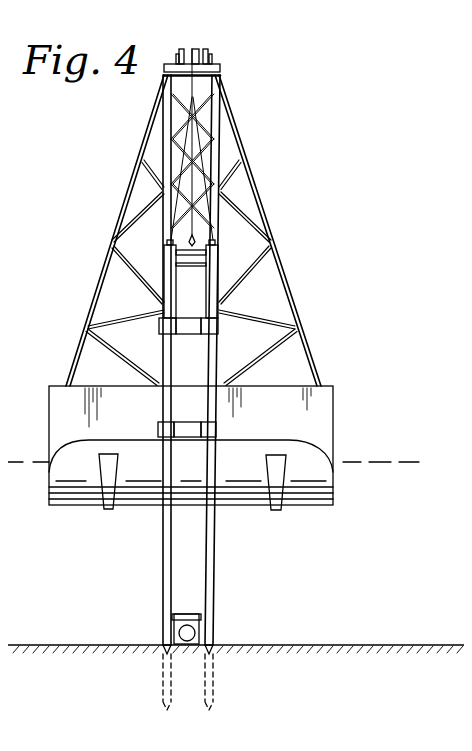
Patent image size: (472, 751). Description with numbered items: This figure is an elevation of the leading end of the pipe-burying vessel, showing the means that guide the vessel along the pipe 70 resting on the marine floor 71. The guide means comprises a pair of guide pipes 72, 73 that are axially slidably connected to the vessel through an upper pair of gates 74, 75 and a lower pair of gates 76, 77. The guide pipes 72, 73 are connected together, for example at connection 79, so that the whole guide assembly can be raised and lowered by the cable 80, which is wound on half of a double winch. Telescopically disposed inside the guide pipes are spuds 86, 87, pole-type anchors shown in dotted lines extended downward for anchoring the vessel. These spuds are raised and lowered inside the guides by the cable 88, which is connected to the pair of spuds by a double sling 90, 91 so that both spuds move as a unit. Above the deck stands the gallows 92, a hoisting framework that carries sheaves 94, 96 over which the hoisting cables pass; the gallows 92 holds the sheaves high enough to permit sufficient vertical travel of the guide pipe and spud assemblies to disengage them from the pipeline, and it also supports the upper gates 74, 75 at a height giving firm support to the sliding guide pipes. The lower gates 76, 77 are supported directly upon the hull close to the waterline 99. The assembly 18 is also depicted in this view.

The drill head / traveling block 18 is at (188, 263).
The pipe 70 is at (194, 632).
The marine floor 71 is at (330, 641).
The guide pipe 72 is at (160, 545).
The guide pipe 73 is at (214, 545).
The gate 74 is at (163, 322).
The gate 75 is at (218, 326).
The gate 76 is at (160, 426).
The gate 77 is at (218, 430).
The connection 79 is at (200, 614).
The cable 80 is at (193, 97).
The spud 86 is at (160, 688).
The spud 87 is at (215, 688).
The cable 88 is at (186, 94).
The double sling 90 is at (165, 212).
The double sling 91 is at (217, 214).
The gallows 92 is at (137, 145).
The sheave 94 is at (200, 47).
The sheave 96 is at (183, 47).
The waterline 99 is at (384, 460).